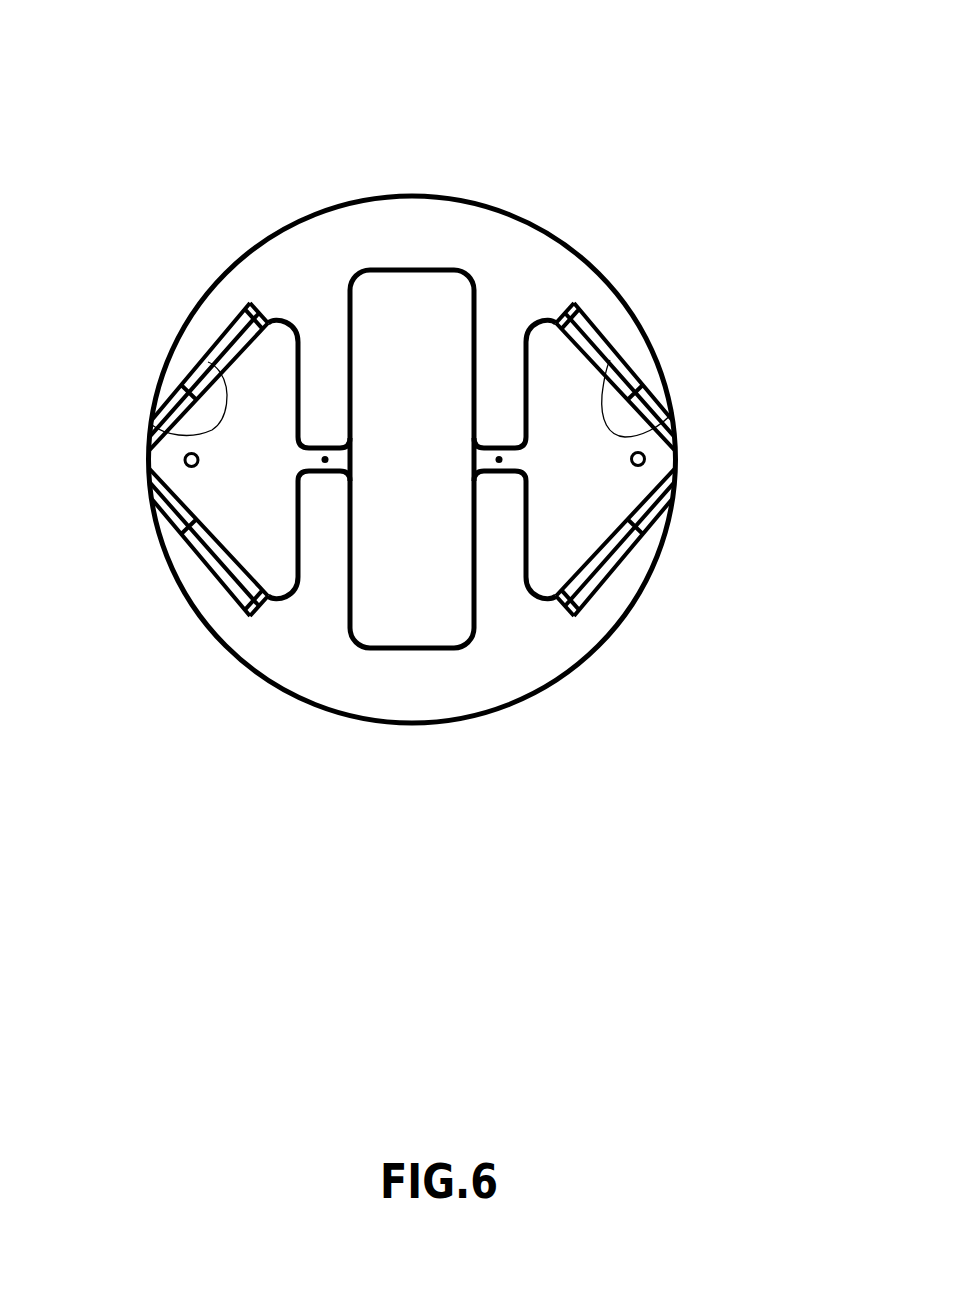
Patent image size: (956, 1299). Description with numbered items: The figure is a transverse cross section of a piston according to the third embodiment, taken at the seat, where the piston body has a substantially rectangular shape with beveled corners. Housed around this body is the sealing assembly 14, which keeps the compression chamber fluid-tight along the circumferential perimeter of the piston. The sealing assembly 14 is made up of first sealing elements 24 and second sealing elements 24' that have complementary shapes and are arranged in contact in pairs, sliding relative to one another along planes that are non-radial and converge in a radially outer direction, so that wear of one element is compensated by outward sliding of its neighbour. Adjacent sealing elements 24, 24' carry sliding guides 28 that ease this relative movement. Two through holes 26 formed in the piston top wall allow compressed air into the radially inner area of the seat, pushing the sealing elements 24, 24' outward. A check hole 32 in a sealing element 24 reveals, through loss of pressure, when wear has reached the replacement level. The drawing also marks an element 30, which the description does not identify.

The sealing assembly 14 is at (432, 170).
The first sealing element 24 is at (437, 571).
The second sealing element 24' is at (512, 465).
The through hole 26 is at (326, 452).
The sliding guide 28 is at (210, 362).
The recess 30 is at (152, 425).
The check hole 32 is at (185, 462).